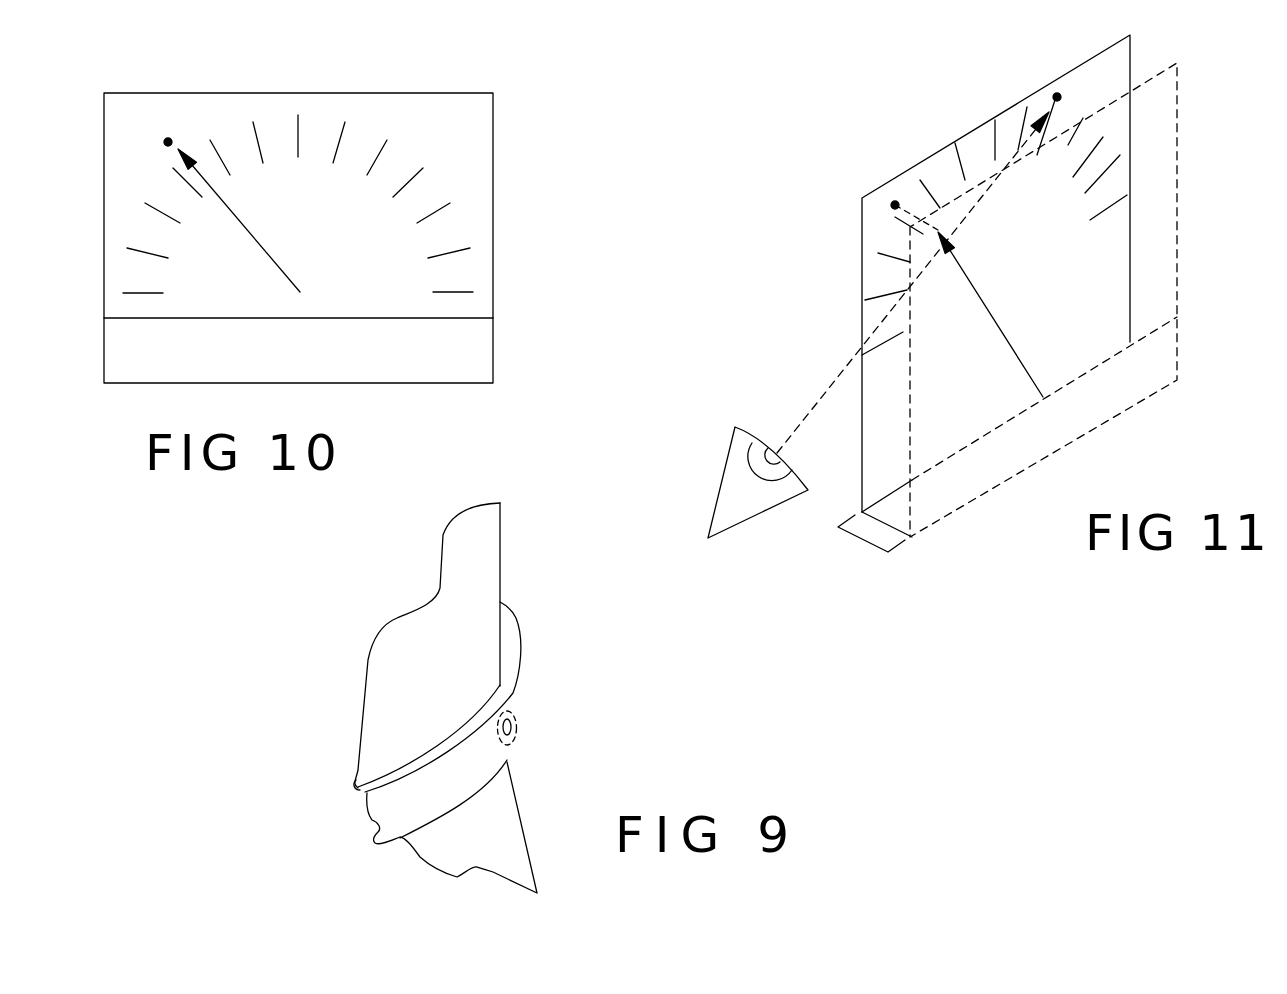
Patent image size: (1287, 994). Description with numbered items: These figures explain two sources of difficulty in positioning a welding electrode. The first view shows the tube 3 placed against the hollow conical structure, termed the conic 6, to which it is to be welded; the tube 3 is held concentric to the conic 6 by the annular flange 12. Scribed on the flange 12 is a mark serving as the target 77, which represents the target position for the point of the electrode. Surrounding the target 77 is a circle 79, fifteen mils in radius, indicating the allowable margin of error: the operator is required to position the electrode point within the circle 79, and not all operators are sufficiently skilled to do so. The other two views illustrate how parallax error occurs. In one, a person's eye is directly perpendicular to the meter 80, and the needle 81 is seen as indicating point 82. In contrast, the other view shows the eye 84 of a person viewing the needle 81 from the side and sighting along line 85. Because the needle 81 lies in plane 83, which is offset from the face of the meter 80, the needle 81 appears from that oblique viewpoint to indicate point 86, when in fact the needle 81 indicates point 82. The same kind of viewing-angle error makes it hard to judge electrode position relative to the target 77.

In FIG. 9, the tube 3 is at (448, 661).
In FIG. 9, the conic 6 is at (497, 845).
In FIG. 9, the annular flange 12 is at (367, 820).
In FIG. 9, the target 77 is at (534, 726).
In FIG. 9, the circle 79 is at (521, 699).
In FIG. 10, the meter 80 is at (493, 183).
In FIG. 11, the meter 80 is at (862, 543).
In FIG. 10, the needle 81 is at (250, 236).
In FIG. 11, the needle 81 is at (983, 307).
In FIG. 10, the point 82 is at (168, 140).
In FIG. 11, the point 82 is at (895, 200).
In FIG. 11, the plane 83 is at (1022, 473).
In FIG. 11, the eye 84 is at (768, 510).
In FIG. 11, the line 85 is at (830, 387).
In FIG. 11, the point 86 is at (1052, 90).